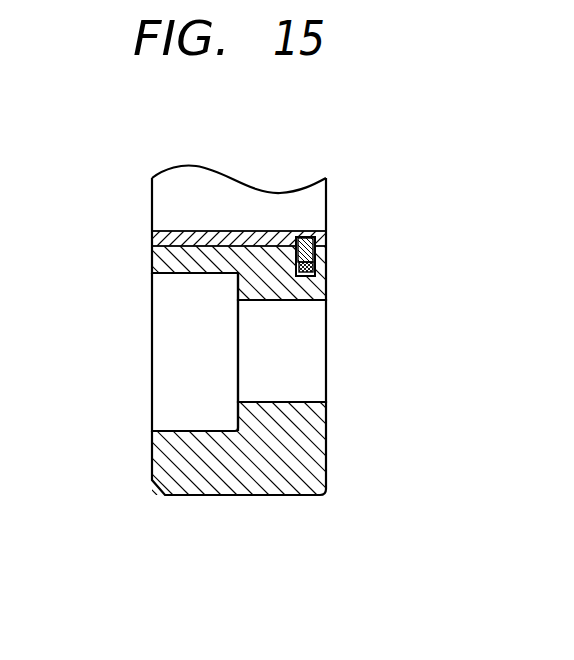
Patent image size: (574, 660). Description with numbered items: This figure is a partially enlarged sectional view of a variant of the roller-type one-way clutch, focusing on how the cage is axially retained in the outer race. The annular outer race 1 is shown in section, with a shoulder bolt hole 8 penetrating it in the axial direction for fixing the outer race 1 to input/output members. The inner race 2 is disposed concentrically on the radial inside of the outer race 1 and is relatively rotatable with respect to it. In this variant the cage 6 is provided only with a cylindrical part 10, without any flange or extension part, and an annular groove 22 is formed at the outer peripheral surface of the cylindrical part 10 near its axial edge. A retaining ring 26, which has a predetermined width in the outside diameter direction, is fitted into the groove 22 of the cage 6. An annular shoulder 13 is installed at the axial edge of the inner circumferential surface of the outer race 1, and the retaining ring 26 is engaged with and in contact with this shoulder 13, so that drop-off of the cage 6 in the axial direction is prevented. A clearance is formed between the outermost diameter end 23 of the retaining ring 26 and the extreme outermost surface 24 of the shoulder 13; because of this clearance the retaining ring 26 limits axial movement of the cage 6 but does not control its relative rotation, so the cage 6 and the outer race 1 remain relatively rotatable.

The outer race 1 is at (280, 475).
The inner race 2 is at (227, 197).
The cage 6 is at (157, 240).
The shoulder bolt hole 8 is at (188, 431).
The cylindrical part 10 is at (178, 232).
The shoulder 13 is at (303, 285).
The groove 22 is at (348, 212).
The outermost diameter end 23 is at (313, 256).
The extreme outermost surface 24 is at (315, 273).
The retaining ring 26 is at (312, 240).